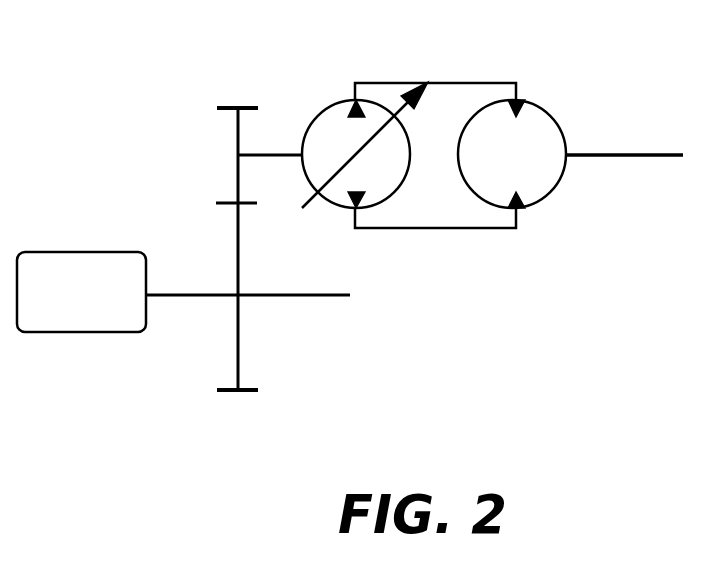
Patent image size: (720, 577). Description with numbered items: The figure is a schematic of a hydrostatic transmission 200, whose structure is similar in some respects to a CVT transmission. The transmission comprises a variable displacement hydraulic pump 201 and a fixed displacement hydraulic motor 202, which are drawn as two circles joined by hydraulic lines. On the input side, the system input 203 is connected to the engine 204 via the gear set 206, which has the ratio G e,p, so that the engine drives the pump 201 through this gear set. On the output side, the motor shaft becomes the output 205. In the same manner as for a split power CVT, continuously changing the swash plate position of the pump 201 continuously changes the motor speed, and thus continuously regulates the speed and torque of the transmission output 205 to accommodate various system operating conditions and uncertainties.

The hydrostatic transmission 200 is at (419, 153).
The variable displacement hydraulic pump 201 is at (322, 107).
The fixed displacement hydraulic motor 202 is at (535, 101).
The system input 203 is at (187, 302).
The engine 204 is at (107, 304).
The output 205 is at (653, 153).
The gear set 206 is at (195, 249).